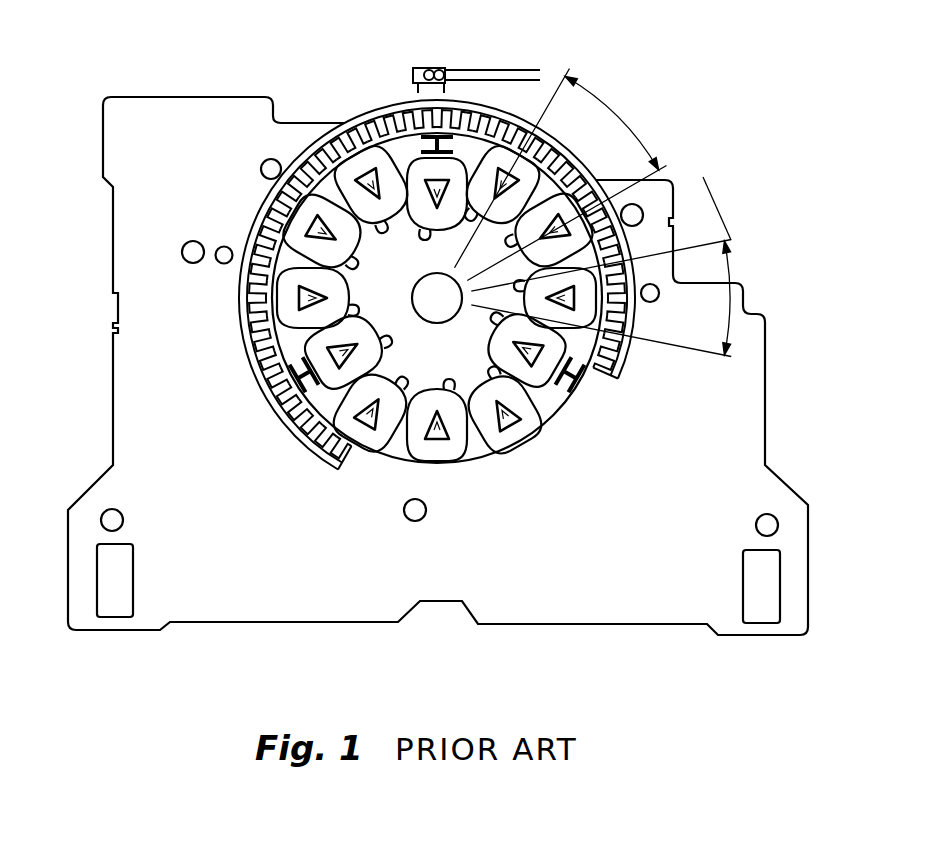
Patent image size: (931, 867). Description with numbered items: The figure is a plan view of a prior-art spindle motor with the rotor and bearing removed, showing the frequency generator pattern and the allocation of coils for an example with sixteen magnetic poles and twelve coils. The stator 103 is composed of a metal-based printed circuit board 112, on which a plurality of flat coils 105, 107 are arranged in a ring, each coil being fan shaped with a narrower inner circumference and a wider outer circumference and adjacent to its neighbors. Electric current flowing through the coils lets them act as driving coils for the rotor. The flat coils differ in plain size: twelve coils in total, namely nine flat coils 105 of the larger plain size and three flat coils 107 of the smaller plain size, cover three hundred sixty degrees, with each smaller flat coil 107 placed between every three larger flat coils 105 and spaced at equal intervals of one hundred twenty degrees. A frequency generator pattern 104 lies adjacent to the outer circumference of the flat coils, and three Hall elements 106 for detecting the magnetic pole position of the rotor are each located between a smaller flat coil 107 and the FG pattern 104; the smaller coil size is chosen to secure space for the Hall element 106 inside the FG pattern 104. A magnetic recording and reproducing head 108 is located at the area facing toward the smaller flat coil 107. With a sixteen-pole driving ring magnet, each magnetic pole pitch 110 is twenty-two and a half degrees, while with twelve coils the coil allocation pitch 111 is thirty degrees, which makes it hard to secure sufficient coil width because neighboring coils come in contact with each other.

The stator 103 is at (190, 90).
The frequency generator (FG) pattern 104 is at (368, 128).
The flat coil of larger plain size 105 is at (440, 458).
The Hall element 106 is at (588, 387).
The flat coil of smaller plain size 107 is at (335, 366).
The magnetic recording and reproducing head 108 is at (433, 68).
The magnetic pole pitch 110 is at (729, 266).
The coil allocation pitch 111 is at (641, 133).
The metal-based printed circuit board 112 is at (651, 601).